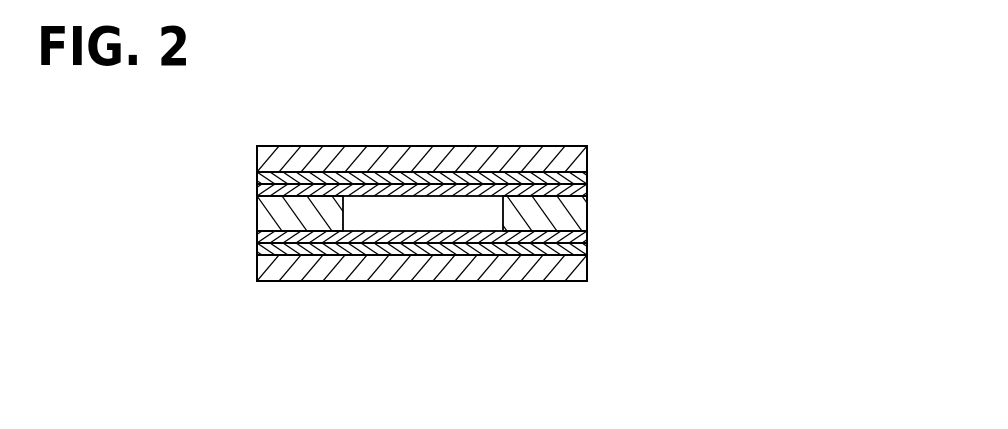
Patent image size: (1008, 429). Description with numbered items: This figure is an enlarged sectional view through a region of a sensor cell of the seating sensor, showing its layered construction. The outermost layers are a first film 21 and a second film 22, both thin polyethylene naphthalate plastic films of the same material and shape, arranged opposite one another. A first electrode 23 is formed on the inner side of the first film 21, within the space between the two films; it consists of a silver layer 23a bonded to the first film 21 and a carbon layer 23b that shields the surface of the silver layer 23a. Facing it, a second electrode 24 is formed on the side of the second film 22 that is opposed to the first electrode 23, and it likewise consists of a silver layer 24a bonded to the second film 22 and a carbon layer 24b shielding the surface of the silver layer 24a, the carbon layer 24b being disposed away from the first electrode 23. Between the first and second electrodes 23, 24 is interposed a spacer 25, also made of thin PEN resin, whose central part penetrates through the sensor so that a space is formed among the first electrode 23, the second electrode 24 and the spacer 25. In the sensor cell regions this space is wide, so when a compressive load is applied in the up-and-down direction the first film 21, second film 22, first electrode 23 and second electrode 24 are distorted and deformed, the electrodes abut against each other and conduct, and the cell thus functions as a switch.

The first film 21 is at (415, 150).
The second film 22 is at (415, 265).
The first electrode 23 is at (524, 149).
The silver layer 23a is at (578, 177).
The carbon layer 23b is at (578, 190).
The second electrode 24 is at (524, 277).
The silver layer 24a is at (578, 248).
The carbon layer 24b is at (580, 237).
The spacer 25 is at (268, 210).